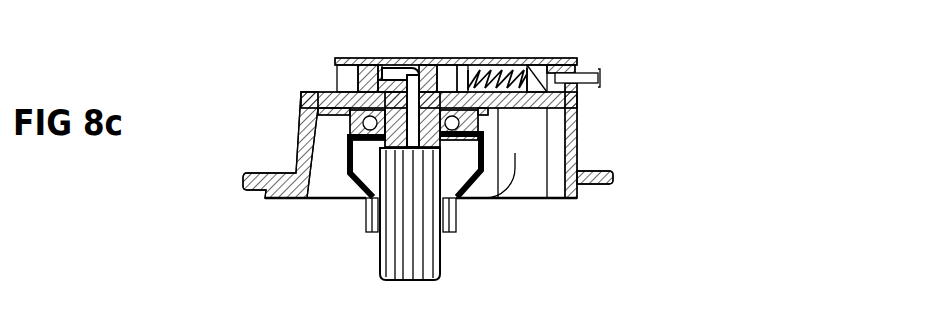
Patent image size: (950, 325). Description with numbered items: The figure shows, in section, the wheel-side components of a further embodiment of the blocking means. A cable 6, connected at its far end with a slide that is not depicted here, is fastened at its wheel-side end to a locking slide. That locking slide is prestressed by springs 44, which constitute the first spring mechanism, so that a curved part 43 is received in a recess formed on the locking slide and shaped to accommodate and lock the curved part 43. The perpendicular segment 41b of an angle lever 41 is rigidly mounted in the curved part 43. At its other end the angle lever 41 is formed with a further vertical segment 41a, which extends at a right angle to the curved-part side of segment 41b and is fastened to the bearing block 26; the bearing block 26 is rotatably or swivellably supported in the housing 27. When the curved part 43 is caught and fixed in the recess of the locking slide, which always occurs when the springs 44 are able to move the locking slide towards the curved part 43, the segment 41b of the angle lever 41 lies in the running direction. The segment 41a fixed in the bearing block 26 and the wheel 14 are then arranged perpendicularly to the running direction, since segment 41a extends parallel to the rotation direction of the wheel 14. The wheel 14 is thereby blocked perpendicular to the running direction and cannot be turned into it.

The cable 6 is at (576, 62).
The wheel 14 is at (388, 252).
The bearing block 26 is at (514, 190).
The housing 27 is at (578, 118).
The angle lever 41 is at (449, 58).
The vertical segment 41a is at (414, 150).
The perpendicular segment 41b is at (395, 67).
The curved part 43 is at (357, 82).
The springs 44 is at (527, 66).